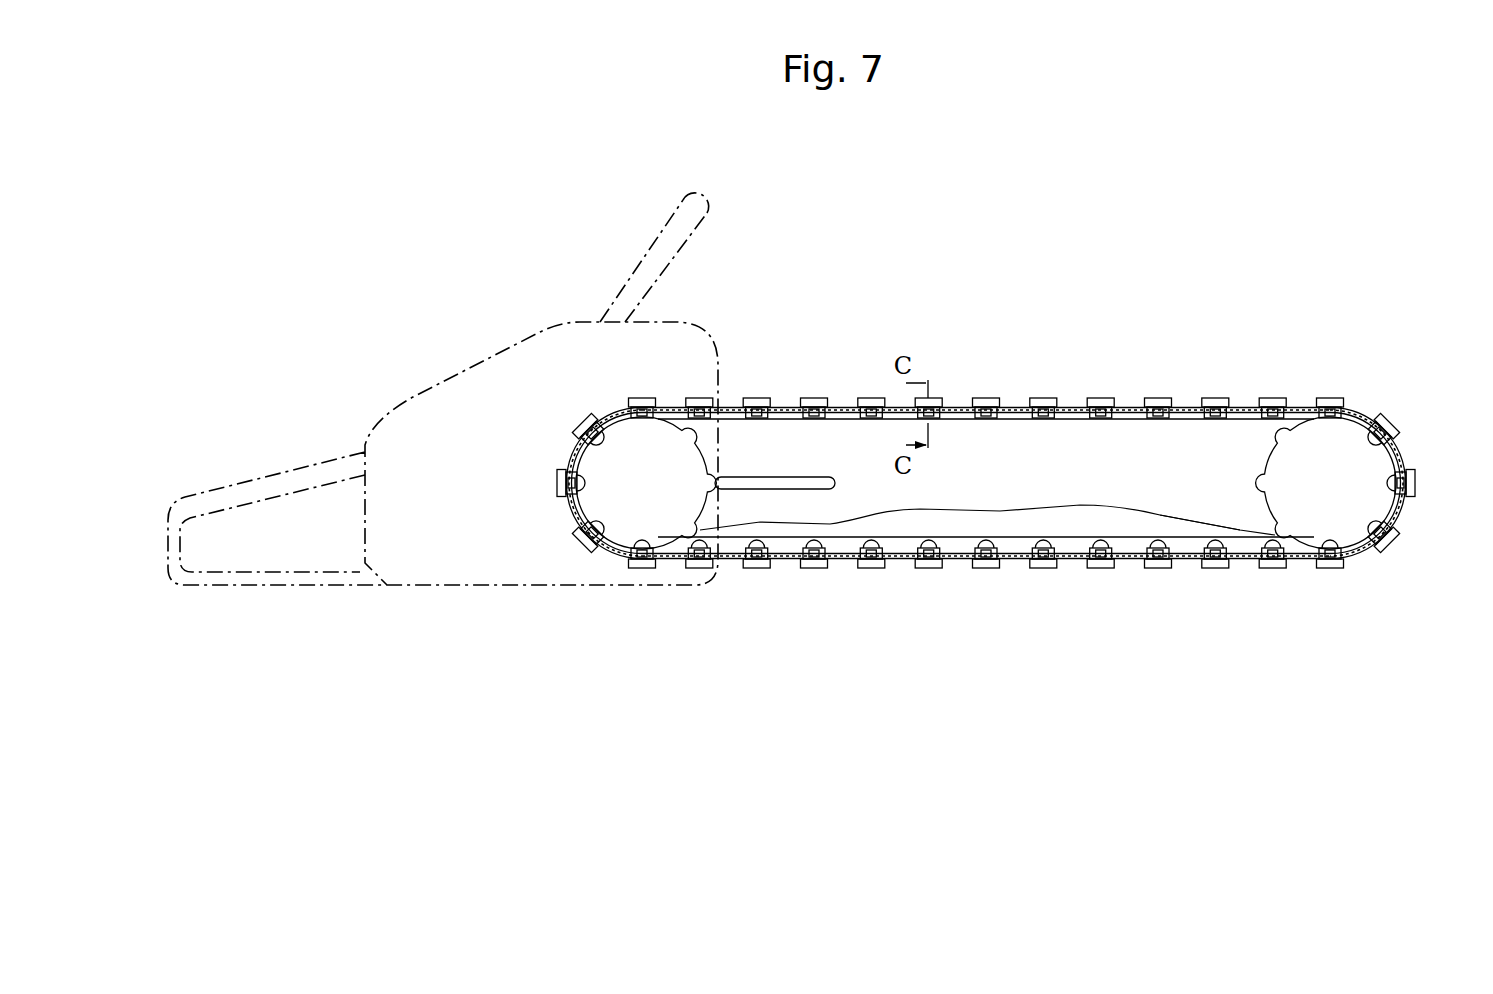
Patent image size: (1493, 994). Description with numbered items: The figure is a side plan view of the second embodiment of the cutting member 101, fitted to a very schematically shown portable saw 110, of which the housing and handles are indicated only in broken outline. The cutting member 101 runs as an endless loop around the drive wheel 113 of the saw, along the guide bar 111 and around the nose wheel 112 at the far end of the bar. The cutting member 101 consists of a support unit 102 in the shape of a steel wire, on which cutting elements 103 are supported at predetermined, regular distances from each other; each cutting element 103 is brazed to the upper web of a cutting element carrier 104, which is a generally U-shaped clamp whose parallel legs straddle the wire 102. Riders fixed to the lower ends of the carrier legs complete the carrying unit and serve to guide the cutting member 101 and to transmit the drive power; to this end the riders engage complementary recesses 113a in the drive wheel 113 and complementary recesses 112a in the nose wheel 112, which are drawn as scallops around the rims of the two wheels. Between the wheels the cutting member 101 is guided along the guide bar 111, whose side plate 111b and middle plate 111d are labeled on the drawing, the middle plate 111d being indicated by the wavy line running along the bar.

The cutting member 101 is at (815, 397).
The support unit 102 is at (965, 570).
The cutting element 103 is at (990, 404).
The cutting element carrier 104 is at (1113, 398).
The chain saw body housing 110 is at (437, 385).
The guide bar 111 is at (1133, 492).
The guide bar plate 111b is at (1168, 481).
The guide bar edge 111d is at (1188, 530).
The nose wheel 112 is at (1353, 438).
The recess in nose wheel 112a is at (1400, 477).
The drive wheel 113 is at (625, 522).
The recess in drive wheel 113a is at (570, 497).